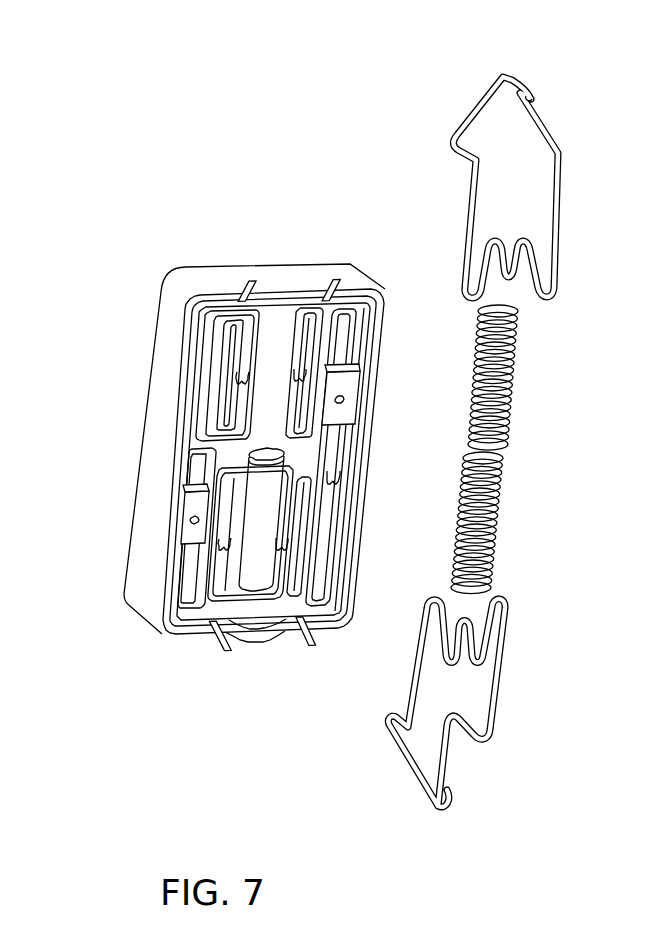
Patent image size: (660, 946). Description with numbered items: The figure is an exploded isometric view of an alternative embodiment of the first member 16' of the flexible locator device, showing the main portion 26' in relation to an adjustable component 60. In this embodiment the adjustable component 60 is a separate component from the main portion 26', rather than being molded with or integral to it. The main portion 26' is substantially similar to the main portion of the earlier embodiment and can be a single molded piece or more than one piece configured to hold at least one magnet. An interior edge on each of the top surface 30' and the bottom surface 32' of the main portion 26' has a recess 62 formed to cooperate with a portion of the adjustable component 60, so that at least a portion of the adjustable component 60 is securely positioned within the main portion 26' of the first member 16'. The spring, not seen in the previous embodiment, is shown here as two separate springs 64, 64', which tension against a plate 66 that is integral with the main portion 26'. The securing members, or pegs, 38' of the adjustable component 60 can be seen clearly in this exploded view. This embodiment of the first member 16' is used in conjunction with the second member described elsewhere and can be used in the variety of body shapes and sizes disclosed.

The first member 16' is at (91, 428).
The main portion 26' is at (215, 461).
The top surface 30' is at (273, 211).
The bottom surface 32' is at (255, 664).
The securing members 38' is at (505, 467).
The adjustable component 60 is at (482, 93).
The recess 62 is at (250, 288).
The spring 64 is at (554, 377).
The spring 64' is at (545, 523).
The plate 66 is at (200, 503).